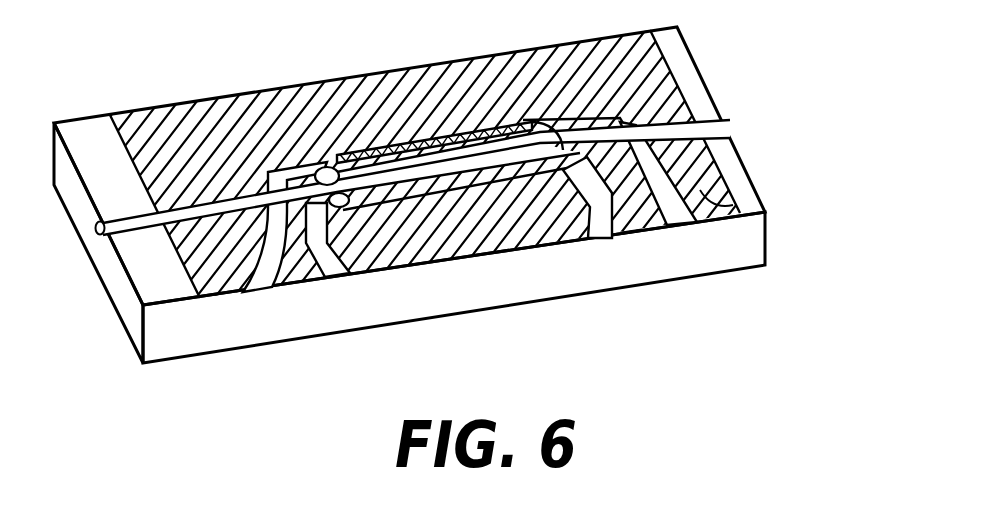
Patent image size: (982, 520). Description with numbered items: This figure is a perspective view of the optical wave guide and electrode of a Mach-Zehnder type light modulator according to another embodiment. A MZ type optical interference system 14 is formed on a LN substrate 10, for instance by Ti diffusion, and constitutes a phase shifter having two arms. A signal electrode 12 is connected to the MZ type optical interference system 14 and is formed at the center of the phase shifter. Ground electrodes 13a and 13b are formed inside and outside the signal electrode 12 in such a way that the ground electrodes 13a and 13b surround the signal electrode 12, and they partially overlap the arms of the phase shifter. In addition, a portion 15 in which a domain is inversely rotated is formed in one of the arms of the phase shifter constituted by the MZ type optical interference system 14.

The LN substrate 10 is at (617, 277).
The signal electrode 12 is at (632, 230).
The ground electrode 13a is at (490, 237).
The ground electrode 13b is at (730, 205).
The MZ type optical interference system 14 is at (129, 222).
The portion in which a domain is inversely rotated 15 is at (407, 138).